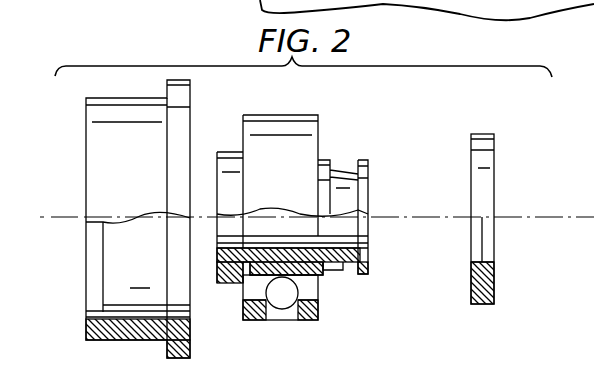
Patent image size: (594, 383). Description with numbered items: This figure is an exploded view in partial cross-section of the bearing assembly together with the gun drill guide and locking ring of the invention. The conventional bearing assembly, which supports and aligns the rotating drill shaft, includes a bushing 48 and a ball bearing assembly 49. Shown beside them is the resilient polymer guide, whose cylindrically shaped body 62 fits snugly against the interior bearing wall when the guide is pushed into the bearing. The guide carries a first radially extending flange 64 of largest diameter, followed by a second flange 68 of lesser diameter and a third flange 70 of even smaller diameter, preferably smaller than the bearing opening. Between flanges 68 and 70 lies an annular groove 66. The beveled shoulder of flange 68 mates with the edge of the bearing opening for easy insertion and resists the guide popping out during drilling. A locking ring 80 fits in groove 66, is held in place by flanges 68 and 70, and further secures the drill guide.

The bushing 48 is at (130, 181).
The ball bearing assembly 49 is at (285, 190).
The cylindrically shaped body 62 is at (240, 272).
The first radially extending flange 64 is at (232, 151).
The annular groove 66 is at (335, 266).
The second radially extending flange 68 is at (326, 158).
The third radially extending flange 70 is at (367, 162).
The locking ring 80 is at (479, 146).